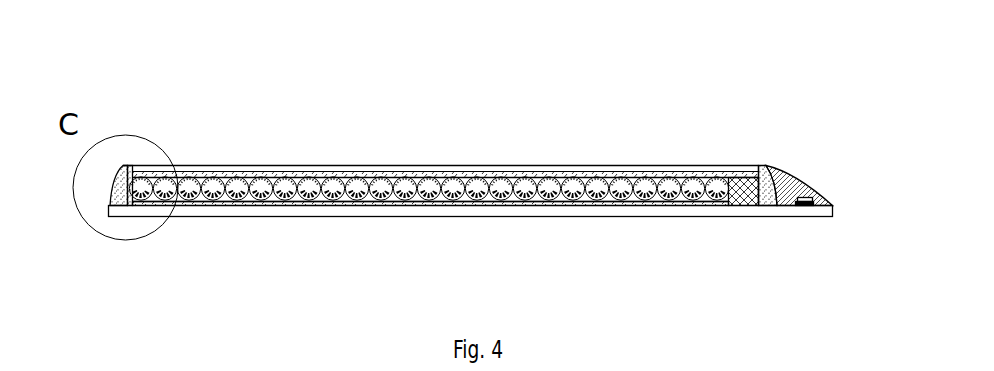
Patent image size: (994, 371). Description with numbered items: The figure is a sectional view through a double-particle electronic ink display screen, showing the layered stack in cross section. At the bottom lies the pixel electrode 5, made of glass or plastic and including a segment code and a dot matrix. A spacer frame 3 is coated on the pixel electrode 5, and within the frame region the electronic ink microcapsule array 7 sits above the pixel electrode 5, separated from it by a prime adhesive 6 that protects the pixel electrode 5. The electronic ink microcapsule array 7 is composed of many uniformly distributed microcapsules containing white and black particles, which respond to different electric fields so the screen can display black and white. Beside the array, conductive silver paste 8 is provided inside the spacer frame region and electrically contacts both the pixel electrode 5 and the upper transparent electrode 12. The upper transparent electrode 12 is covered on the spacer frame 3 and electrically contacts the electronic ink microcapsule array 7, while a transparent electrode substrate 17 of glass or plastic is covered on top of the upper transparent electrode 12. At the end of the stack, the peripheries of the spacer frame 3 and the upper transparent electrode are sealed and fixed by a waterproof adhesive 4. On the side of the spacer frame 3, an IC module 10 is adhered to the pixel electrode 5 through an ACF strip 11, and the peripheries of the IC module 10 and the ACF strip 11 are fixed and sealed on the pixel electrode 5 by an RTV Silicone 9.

The spacer frame 3 is at (755, 177).
The waterproof adhesive 4 is at (816, 240).
The pixel electrode 5 is at (471, 260).
The prime adhesive 6 is at (431, 258).
The electronic ink microcapsule array 7 is at (428, 245).
The conductive silver paste 8 is at (690, 246).
The RTV Silicone 9 is at (822, 126).
The IC module 10 is at (866, 153).
The ACF strip 11 is at (853, 234).
The upper transparent electrode 12 is at (446, 112).
The transparent electrode substrate 17 is at (441, 109).